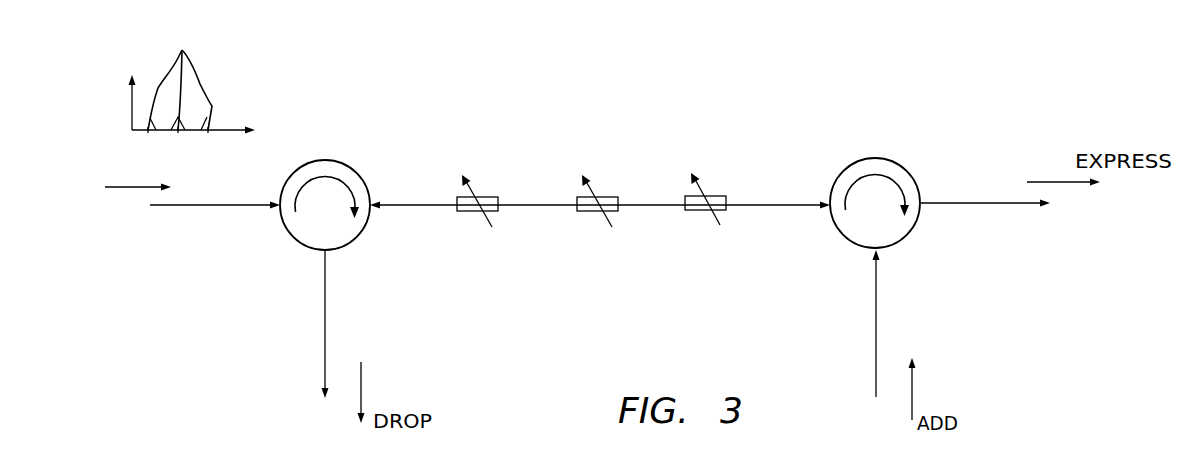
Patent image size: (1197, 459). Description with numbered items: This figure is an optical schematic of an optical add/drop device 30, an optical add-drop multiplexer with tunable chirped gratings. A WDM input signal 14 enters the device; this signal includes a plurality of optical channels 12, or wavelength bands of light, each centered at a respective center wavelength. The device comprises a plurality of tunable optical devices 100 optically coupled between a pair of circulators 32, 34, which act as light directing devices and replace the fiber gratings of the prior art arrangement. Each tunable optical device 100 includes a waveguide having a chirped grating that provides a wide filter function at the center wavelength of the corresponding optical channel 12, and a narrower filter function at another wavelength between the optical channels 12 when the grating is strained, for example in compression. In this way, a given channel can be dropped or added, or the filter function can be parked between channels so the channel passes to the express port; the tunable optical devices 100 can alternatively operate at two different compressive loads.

The optical channel 12 is at (192, 89).
The WDM input signal 14 is at (113, 188).
The optical add/drop device 30 is at (690, 118).
The circulator 32 is at (330, 160).
The circulator 34 is at (879, 157).
The tunable optical device 100 is at (487, 193).